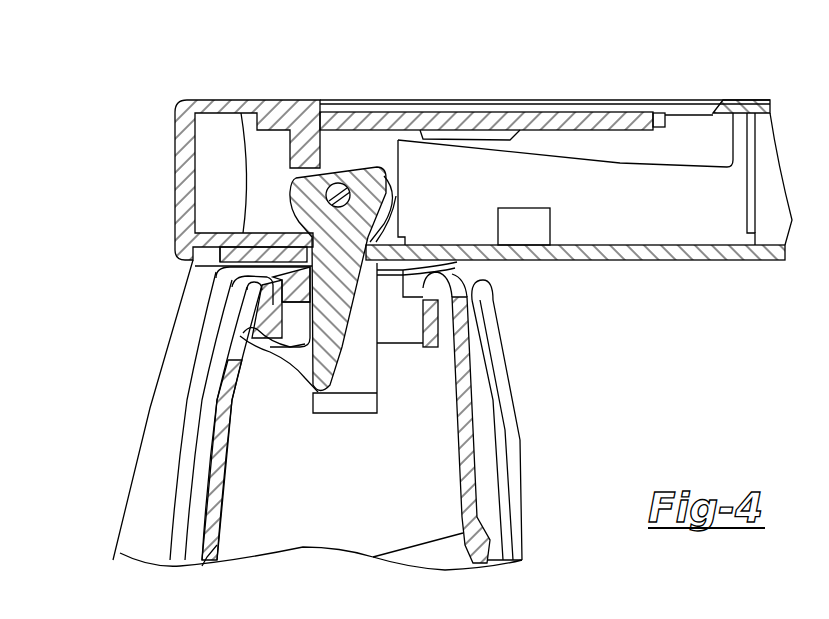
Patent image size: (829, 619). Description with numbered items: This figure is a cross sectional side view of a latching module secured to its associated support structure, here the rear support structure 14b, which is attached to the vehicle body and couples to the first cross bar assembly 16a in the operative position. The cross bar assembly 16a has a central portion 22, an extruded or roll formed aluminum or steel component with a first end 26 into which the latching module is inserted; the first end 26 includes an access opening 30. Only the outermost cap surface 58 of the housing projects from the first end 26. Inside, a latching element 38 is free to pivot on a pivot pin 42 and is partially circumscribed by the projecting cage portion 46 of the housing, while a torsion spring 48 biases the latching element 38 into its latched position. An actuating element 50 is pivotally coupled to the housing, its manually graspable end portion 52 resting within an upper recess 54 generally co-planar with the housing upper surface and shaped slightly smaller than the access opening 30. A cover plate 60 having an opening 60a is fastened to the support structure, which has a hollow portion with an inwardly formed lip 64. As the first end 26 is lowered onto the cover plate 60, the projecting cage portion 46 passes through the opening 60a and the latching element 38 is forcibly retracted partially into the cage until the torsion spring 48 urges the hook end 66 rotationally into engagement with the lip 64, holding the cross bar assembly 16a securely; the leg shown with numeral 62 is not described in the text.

The first cross bar assembly 16a is at (702, 80).
The rear support structure 14b is at (140, 407).
The central portion 22 is at (758, 106).
The first end 26 is at (612, 258).
The access opening 30 is at (637, 110).
The latching element 38 is at (313, 370).
The pivot pin 42 is at (326, 197).
The projecting cage portion 46 is at (360, 403).
The torsion spring 48 is at (427, 302).
The actuating element 50 is at (368, 124).
The manually graspable end portion 52 is at (647, 127).
The upper recess 54 is at (690, 166).
The outermost cap surface 58 is at (174, 132).
The cover plate 60 is at (440, 266).
The opening 60a is at (265, 262).
The leg 62 is at (245, 443).
The inwardly formed lip 64 is at (273, 317).
The hook end 66 is at (248, 340).